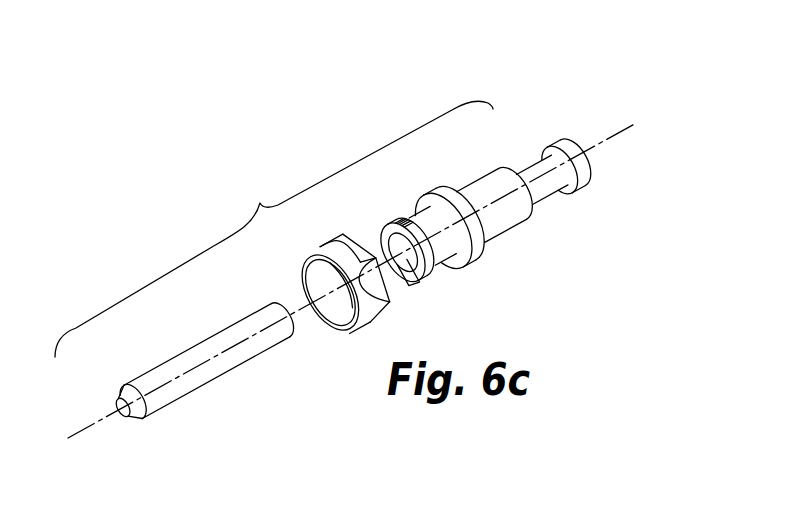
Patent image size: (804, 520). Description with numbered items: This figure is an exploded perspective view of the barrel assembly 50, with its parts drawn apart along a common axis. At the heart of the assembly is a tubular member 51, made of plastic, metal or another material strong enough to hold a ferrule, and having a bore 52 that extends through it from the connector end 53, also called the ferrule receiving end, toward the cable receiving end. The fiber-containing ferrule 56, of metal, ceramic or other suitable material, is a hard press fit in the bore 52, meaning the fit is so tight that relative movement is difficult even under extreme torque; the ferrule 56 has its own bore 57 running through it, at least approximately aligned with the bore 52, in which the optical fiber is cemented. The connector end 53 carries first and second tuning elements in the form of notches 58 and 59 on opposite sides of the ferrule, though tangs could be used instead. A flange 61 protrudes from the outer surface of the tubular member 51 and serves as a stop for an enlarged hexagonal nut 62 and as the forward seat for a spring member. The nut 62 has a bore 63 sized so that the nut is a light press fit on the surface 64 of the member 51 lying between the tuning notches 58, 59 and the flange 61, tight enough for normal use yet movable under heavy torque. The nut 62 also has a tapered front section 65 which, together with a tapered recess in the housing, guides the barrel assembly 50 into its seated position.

The barrel assembly 50 is at (274, 229).
The tubular member 51 is at (478, 180).
The bore 52 is at (400, 243).
The connector end 53 is at (422, 284).
The ferrule 56 is at (217, 368).
The bore 57 is at (122, 410).
The notch 58 is at (406, 218).
The notch 59 is at (390, 247).
The flange 61 is at (482, 254).
The hexagonal nut 62 is at (374, 325).
The bore 63 is at (318, 281).
The surface 64 is at (442, 253).
The tapered front section 65 is at (322, 252).